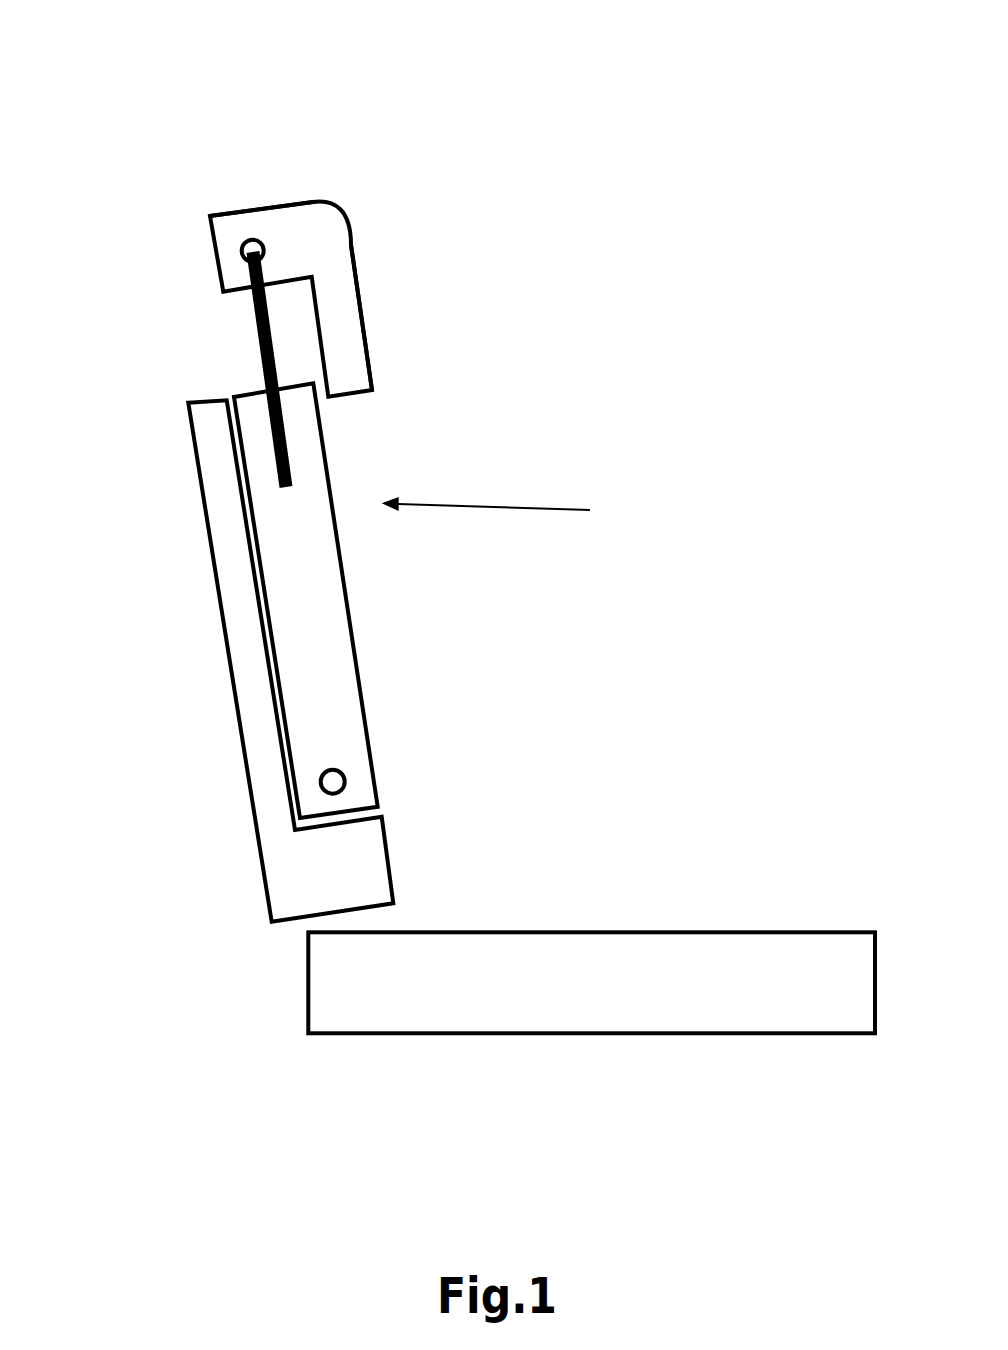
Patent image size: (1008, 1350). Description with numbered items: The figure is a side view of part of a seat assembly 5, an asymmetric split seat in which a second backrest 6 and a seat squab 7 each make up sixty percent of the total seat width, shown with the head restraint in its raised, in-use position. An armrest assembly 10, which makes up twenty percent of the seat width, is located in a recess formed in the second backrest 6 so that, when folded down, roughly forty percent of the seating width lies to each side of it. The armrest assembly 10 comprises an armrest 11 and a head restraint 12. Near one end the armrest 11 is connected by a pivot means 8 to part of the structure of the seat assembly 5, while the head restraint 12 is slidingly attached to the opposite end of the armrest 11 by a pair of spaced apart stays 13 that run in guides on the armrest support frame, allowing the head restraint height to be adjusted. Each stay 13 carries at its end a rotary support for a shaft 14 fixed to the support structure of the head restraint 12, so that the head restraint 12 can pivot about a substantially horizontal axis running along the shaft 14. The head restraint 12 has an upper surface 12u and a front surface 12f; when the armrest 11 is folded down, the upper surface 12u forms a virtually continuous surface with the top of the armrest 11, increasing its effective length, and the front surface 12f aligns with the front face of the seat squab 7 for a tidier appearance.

The seat assembly 5 is at (133, 107).
The second backrest 6 is at (389, 848).
The seat squab 7 is at (510, 932).
The pivot means 8 is at (319, 782).
The armrest assembly 10 is at (512, 512).
The armrest 11 is at (349, 606).
The head restraint 12 is at (370, 347).
The upper surface of the head restraint 12u is at (258, 206).
The front surface of the head restraint 12f is at (353, 258).
The stays 13 is at (262, 348).
The shaft 14 is at (241, 248).